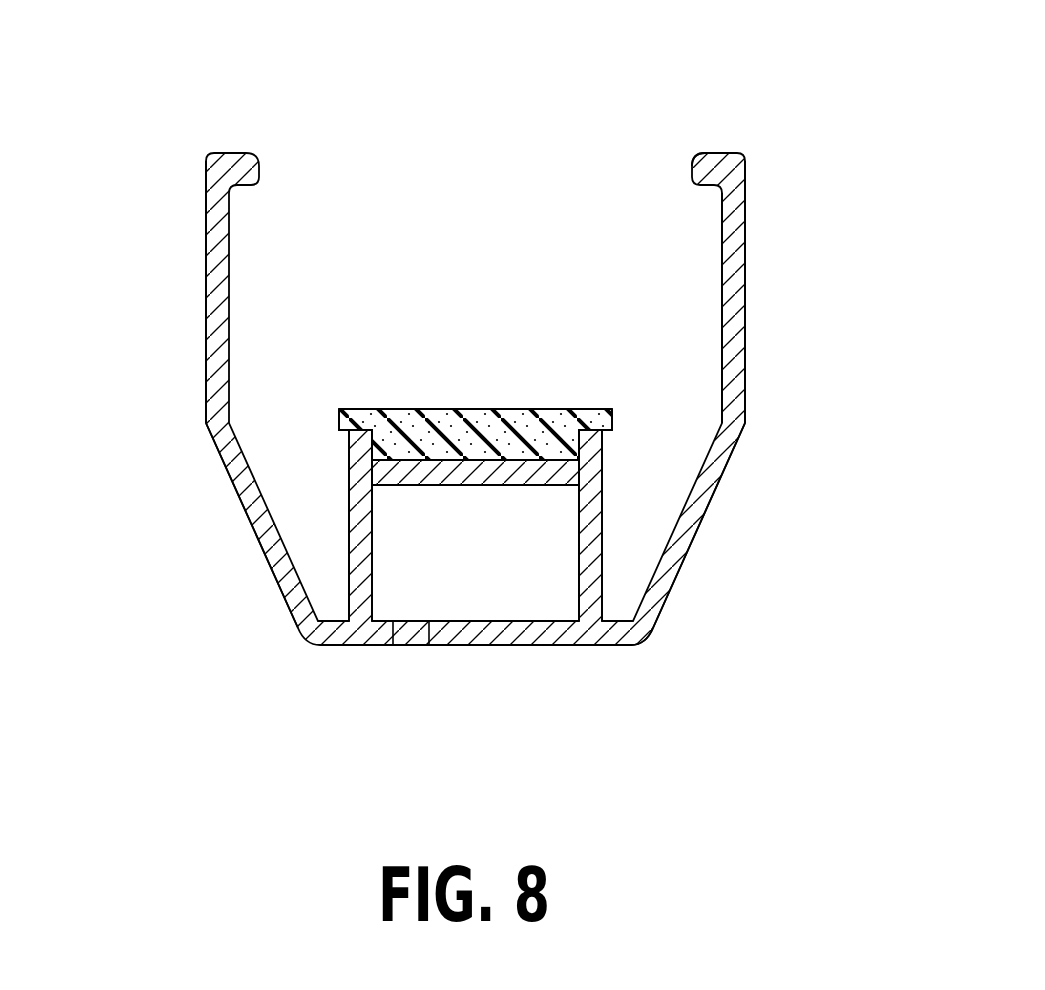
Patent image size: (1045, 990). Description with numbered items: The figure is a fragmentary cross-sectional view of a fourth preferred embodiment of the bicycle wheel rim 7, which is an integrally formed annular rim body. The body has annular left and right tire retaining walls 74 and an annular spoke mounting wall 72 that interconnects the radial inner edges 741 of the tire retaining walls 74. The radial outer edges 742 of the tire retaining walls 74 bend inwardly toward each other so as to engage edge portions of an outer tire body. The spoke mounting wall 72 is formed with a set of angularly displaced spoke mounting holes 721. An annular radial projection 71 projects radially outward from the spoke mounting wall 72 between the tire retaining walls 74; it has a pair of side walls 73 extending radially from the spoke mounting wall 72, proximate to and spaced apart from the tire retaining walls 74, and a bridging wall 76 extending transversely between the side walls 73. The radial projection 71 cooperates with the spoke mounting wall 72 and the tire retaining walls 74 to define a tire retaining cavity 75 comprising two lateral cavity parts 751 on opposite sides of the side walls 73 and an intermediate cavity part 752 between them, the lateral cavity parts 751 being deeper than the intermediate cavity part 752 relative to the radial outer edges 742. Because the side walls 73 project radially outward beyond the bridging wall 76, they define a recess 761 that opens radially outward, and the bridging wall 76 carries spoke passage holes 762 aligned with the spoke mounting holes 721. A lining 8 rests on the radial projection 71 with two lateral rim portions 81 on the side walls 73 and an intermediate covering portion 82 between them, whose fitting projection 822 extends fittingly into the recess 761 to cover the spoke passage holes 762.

The bicycle wheel rim 7 is at (798, 226).
The radial projection 71 is at (448, 460).
The spoke mounting wall 72 is at (443, 632).
The spoke mounting holes 721 is at (412, 632).
The side walls 73 is at (325, 442).
The tire retaining walls 74 is at (213, 323).
The radial inner edges 741 is at (645, 610).
The radial outer edges 742 is at (694, 164).
The tire retaining cavity 75 is at (530, 292).
The lateral cavity parts 751 is at (307, 543).
The intermediate cavity part 752 is at (533, 377).
The bridging wall 76 is at (527, 480).
The recess 761 is at (390, 408).
The spoke passage holes 762 is at (413, 477).
The lining 8 is at (418, 407).
The lateral rim portions 81 is at (360, 445).
The intermediate covering portion 82 is at (489, 460).
The fitting projection 822 is at (492, 465).